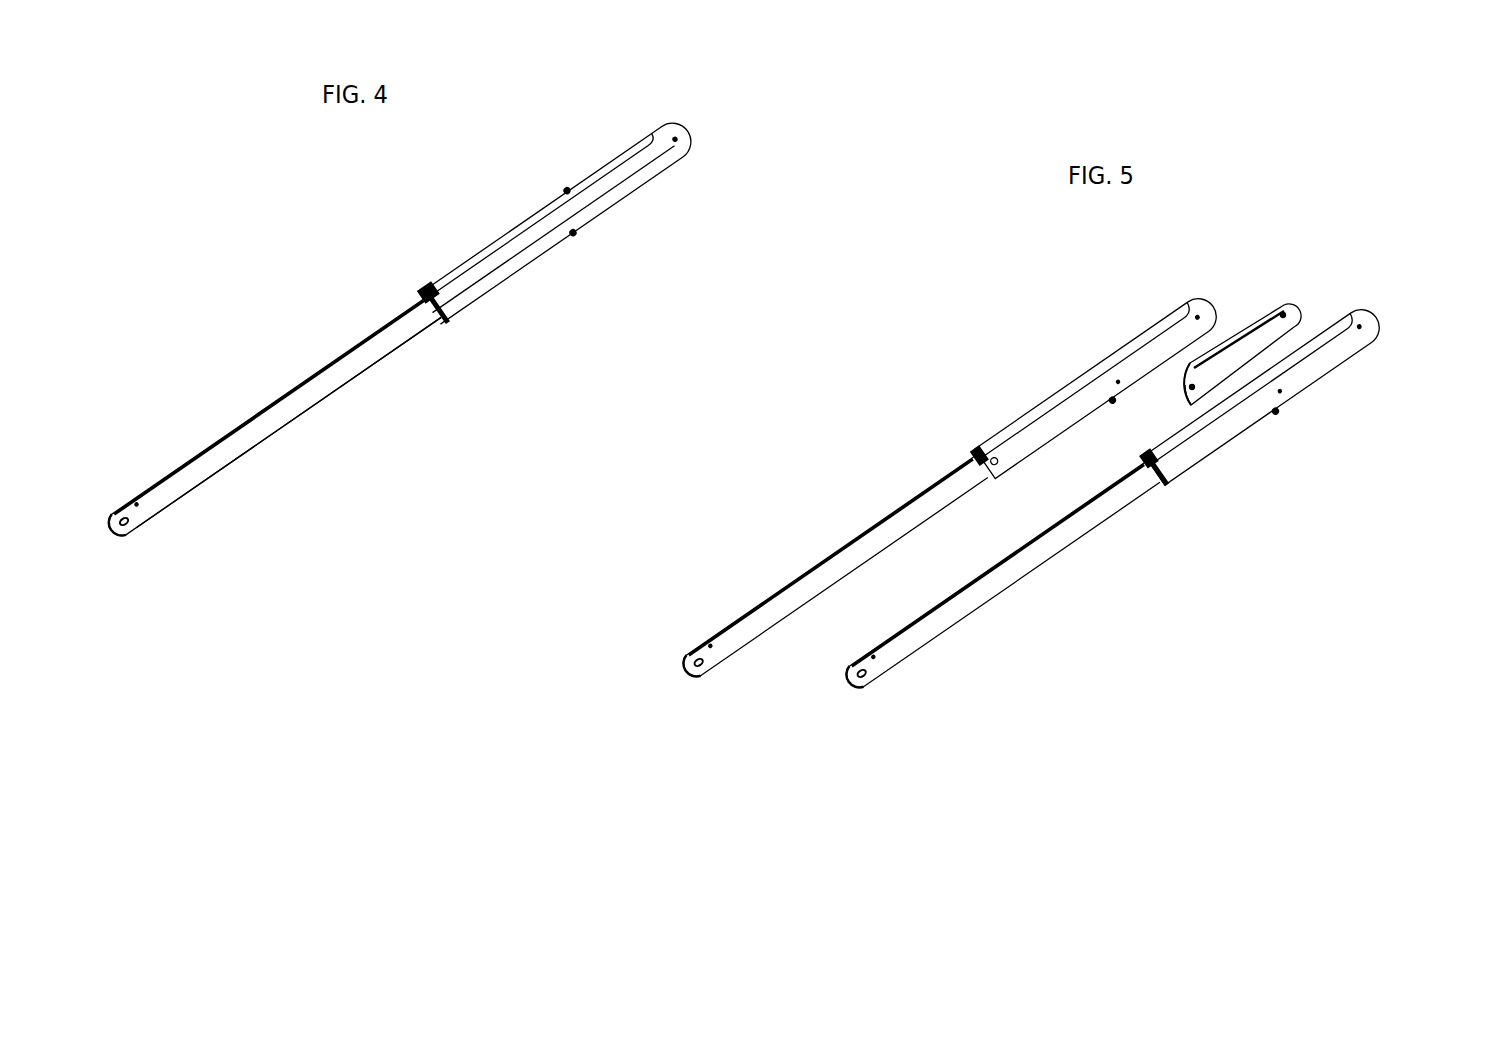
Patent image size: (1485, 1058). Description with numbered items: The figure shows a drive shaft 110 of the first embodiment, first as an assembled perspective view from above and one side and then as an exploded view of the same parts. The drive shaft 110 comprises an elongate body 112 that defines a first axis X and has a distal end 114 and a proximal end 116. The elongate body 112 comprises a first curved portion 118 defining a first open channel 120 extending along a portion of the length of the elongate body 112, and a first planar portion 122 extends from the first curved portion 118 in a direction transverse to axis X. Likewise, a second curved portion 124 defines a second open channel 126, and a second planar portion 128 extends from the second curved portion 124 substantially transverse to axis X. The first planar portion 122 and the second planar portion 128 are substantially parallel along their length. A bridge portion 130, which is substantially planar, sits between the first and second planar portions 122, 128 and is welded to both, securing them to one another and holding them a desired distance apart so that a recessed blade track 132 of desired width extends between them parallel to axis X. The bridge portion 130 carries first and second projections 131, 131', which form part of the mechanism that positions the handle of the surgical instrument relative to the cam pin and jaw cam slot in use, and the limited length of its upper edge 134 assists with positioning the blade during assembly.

In FIG. 4, the drive shaft 110 is at (434, 383).
In FIG. 5, the drive shaft 110 is at (1073, 512).
In FIG. 4, the elongate body 112 is at (250, 412).
In FIG. 4, the distal end 114 is at (333, 479).
In FIG. 5, the distal end 114 is at (930, 609).
In FIG. 4, the proximal end 116 is at (563, 219).
In FIG. 5, the proximal end 116 is at (1209, 378).
In FIG. 4, the first curved portion 118 is at (449, 275).
In FIG. 5, the first curved portion 118 is at (1040, 407).
In FIG. 5, the first open channel 120 is at (972, 459).
In FIG. 5, the first planar portion 122 is at (860, 537).
In FIG. 4, the second curved portion 124 is at (483, 267).
In FIG. 5, the second curved portion 124 is at (1240, 410).
In FIG. 5, the second open channel 126 is at (1148, 490).
In FIG. 4, the second planar portion 128 is at (330, 375).
In FIG. 5, the second planar portion 128 is at (963, 603).
In FIG. 5, the bridge portion 130 is at (1255, 378).
In FIG. 5, the first projection 131 is at (1156, 331).
In FIG. 5, the second projection 131' is at (1222, 458).
In FIG. 4, the blade track 132 is at (512, 232).
In FIG. 5, the upper edge 134 is at (1260, 320).